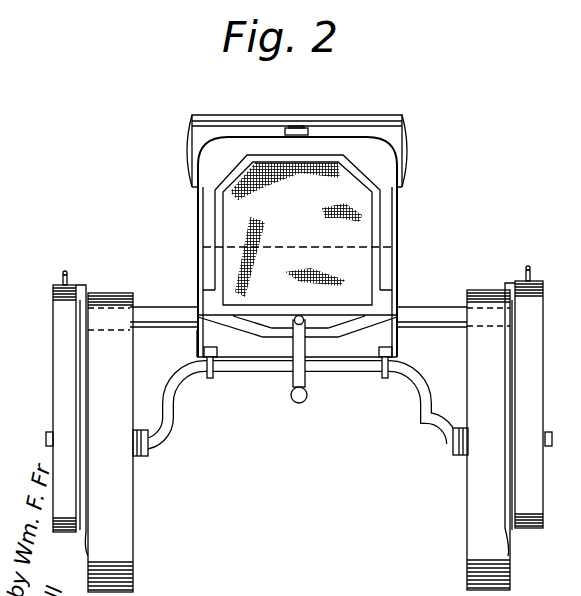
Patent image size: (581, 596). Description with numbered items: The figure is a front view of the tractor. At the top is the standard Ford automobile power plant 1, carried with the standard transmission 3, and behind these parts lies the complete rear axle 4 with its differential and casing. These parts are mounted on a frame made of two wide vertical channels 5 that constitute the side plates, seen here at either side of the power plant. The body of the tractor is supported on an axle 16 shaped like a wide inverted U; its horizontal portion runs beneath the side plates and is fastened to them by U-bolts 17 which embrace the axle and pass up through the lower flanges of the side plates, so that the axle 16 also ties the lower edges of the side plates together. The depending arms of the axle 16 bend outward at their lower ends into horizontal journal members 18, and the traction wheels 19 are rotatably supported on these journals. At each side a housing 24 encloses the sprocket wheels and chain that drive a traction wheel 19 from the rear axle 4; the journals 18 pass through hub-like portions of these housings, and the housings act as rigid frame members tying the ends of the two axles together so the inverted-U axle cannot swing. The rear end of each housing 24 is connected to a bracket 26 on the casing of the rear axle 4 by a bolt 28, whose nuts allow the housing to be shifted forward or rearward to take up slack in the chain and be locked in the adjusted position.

The standard Ford automobile power plant 1 is at (392, 210).
The standard transmission 3 is at (575, 292).
The rear axle 4 is at (415, 307).
The vertical channels 5 is at (400, 337).
The axle 16 is at (273, 368).
The U-bolts 17 is at (388, 376).
The journal members 18 is at (447, 447).
The traction wheels 19 is at (478, 468).
The housing 24 is at (535, 368).
The bracket 26 is at (512, 290).
The bolt 28 is at (530, 272).